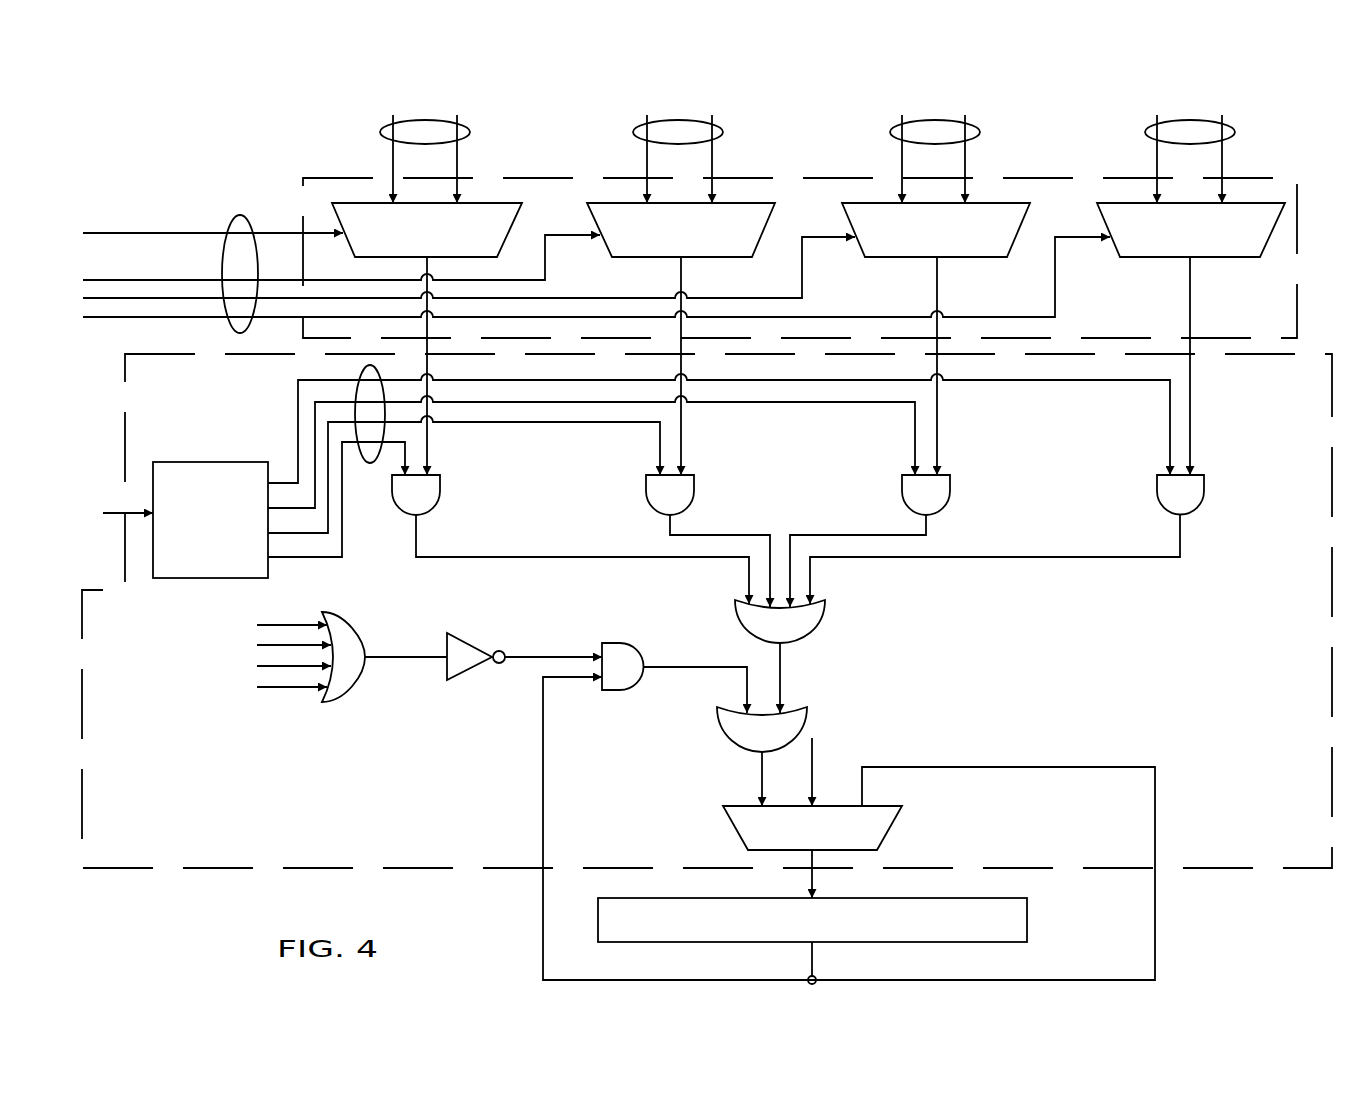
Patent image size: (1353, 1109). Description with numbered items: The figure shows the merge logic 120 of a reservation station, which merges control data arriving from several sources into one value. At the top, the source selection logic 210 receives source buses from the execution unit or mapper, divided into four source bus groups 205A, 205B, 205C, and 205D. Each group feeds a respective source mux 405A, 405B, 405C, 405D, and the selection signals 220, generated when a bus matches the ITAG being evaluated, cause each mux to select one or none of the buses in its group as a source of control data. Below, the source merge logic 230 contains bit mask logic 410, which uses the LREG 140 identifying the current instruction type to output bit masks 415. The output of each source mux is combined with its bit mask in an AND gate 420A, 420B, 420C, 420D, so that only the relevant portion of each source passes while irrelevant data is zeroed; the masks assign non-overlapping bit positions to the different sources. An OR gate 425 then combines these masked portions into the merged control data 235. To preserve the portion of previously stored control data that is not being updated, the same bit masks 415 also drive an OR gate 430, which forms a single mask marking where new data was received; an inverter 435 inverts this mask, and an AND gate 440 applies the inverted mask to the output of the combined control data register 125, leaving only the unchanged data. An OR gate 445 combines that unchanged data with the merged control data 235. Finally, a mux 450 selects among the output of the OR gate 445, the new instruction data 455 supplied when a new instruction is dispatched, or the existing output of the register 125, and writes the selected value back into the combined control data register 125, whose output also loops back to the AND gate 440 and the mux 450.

The merge logic 120 is at (160, 168).
The selection signals 220 is at (243, 215).
The source bus group 205A is at (470, 132).
The source bus group 205B is at (723, 132).
The source bus group 205C is at (980, 132).
The source bus group 205D is at (1235, 132).
The source mux 405A is at (487, 246).
The source mux 405B is at (742, 246).
The source mux 405C is at (996, 246).
The source mux 405D is at (1251, 246).
The source selection logic 210 is at (1297, 286).
The LREG 140 is at (104, 499).
The bit mask logic 410 is at (230, 563).
The bit masks 415 is at (370, 463).
The AND gate 420A is at (440, 492).
The AND gate 420B is at (694, 492).
The AND gate 420C is at (950, 492).
The AND gate 420D is at (1204, 492).
The OR gate 425 is at (735, 603).
The merged control data 235 is at (785, 673).
The OR gate 430 is at (347, 693).
The inverter 435 is at (460, 680).
The AND gate 440 is at (617, 690).
The OR gate 445 is at (807, 712).
The new instruction data 455 is at (813, 752).
The mux 450 is at (862, 842).
The combined control data register 125 is at (1028, 918).
The source merge logic 230 is at (1275, 870).